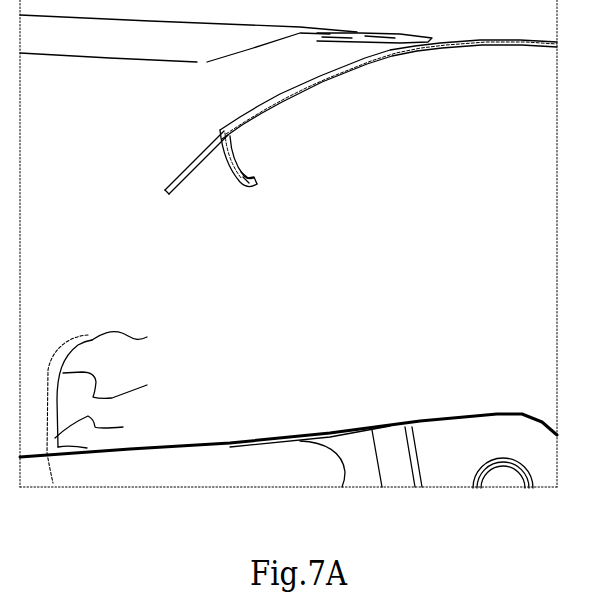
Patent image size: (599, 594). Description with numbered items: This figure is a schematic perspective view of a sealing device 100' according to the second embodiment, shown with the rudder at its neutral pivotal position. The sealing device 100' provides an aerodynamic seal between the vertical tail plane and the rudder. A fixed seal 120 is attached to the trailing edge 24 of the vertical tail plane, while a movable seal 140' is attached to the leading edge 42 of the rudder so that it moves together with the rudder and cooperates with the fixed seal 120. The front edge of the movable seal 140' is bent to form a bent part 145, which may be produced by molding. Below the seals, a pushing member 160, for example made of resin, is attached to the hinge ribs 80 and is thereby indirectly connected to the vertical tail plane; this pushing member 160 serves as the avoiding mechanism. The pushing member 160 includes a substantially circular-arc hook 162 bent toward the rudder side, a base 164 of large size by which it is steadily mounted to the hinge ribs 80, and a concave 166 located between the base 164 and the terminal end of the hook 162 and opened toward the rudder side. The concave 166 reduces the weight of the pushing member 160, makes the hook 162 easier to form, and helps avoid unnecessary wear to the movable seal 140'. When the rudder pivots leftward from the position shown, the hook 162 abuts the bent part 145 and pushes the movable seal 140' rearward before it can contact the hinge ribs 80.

The trailing edge 24 is at (192, 58).
The leading edge 42 is at (181, 145).
The bent part 145 is at (198, 206).
The sealing device 100' is at (283, 188).
The movable seal 140' is at (388, 101).
The fixed seal 120 is at (432, 21).
The pushing member 160 is at (60, 358).
The hook 162 is at (147, 328).
The concave 166 is at (136, 381).
The base 164 is at (118, 420).
The hinge ribs 80 is at (203, 482).